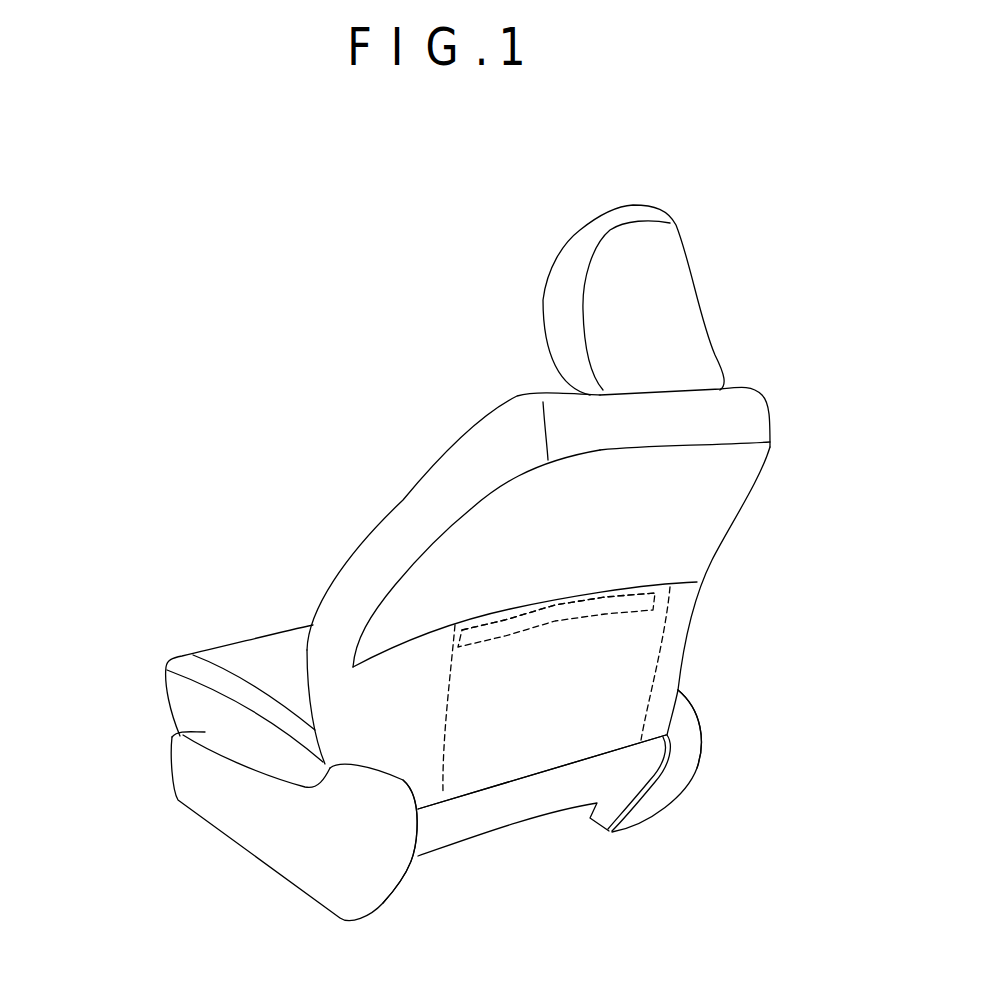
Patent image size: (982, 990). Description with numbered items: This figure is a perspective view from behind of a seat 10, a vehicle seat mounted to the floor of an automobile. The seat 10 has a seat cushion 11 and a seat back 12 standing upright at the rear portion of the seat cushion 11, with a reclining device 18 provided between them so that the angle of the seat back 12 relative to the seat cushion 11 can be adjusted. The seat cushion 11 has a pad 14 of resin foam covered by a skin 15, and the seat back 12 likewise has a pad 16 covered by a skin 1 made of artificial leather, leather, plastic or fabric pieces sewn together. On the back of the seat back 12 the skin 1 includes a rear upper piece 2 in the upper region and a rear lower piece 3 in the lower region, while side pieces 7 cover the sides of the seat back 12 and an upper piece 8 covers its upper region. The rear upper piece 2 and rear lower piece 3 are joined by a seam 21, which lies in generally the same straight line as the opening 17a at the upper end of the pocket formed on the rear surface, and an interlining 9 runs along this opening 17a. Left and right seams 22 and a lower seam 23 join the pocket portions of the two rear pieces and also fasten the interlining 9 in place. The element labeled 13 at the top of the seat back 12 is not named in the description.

The skin 1 is at (743, 518).
The rear upper piece 2 is at (730, 473).
The rear lower piece 3 is at (680, 637).
The side pieces 7 is at (437, 495).
The upper piece 8 is at (723, 410).
The interlining 9 is at (505, 615).
The seat 10 is at (360, 408).
The seat cushion 11 is at (243, 636).
The seat back 12 is at (350, 557).
The headrest 13 is at (537, 296).
The pad 14 is at (203, 707).
The skin 15 is at (172, 740).
The pad 16 is at (673, 538).
The opening 17a is at (565, 597).
The reclining device 18 is at (350, 773).
The seam 21 is at (408, 635).
The seams 22 is at (443, 690).
The seam 23 is at (502, 777).